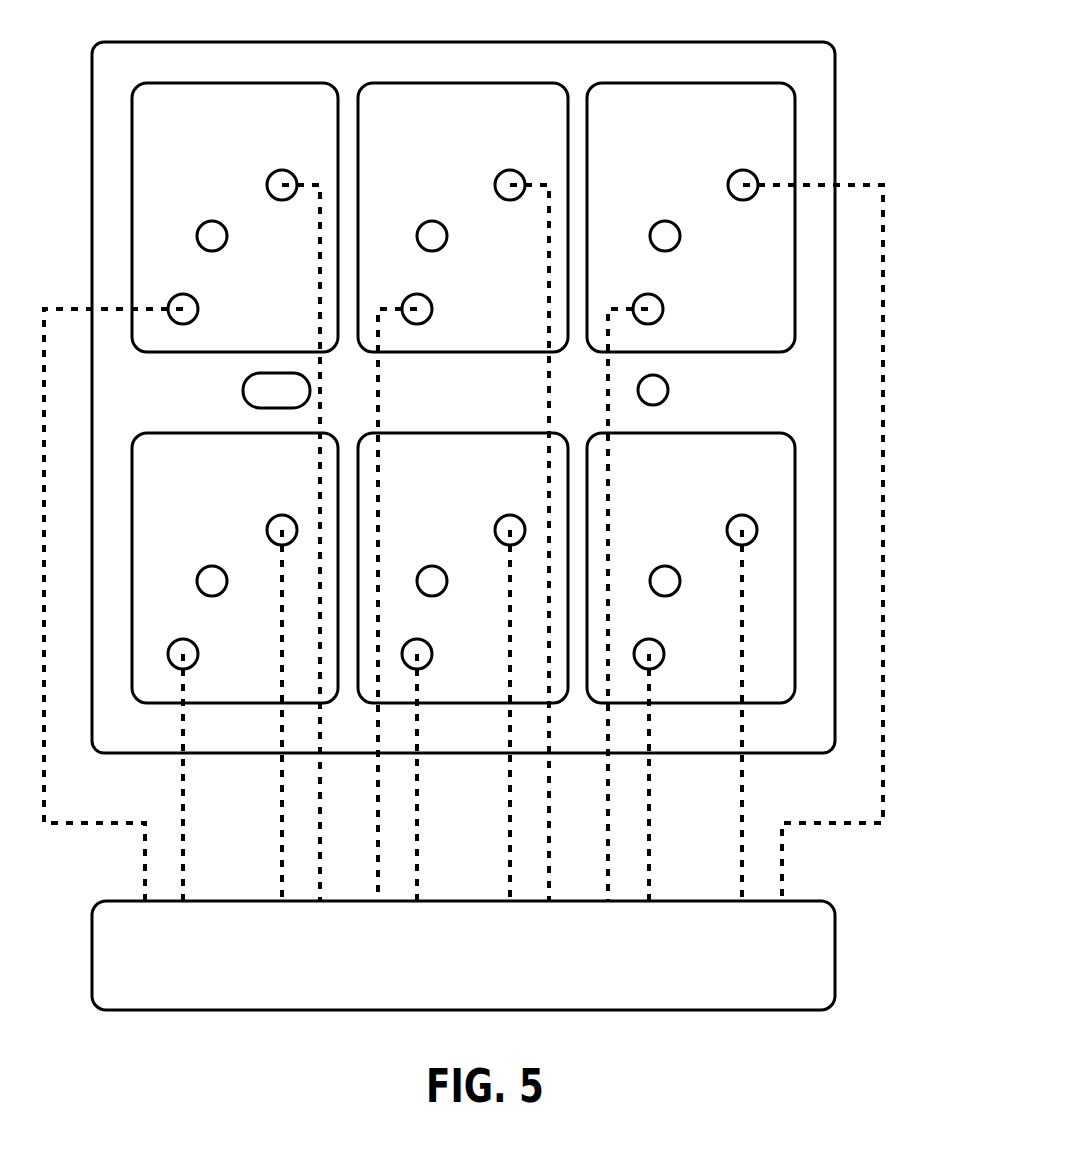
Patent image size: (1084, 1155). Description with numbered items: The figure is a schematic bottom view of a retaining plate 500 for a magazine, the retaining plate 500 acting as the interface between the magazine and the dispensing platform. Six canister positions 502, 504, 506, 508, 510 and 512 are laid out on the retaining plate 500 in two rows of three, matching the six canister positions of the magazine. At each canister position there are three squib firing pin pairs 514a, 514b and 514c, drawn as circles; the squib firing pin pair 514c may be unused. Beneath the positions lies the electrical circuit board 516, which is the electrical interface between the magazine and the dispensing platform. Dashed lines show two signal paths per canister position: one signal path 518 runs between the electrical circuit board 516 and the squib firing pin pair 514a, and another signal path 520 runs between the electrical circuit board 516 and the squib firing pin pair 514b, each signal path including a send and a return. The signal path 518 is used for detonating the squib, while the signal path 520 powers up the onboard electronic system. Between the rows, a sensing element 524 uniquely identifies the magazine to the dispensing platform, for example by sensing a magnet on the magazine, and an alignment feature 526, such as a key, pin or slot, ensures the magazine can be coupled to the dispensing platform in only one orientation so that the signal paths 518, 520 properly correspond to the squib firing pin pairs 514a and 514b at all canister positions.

The retaining plate 500 is at (713, 42).
The canister position 502 is at (251, 111).
The canister position 504 is at (479, 111).
The canister position 506 is at (707, 111).
The canister position 508 is at (707, 461).
The canister position 510 is at (479, 461).
The canister position 512 is at (251, 461).
The squib firing pin pair 514a is at (281, 170).
The squib firing pin pair 514b is at (183, 294).
The squib firing pin pair 514c is at (213, 221).
The electrical circuit board 516 is at (447, 978).
The signal path 518 is at (280, 803).
The signal path 520 is at (47, 797).
The sensing element 524 is at (292, 400).
The alignment feature 526 is at (650, 397).